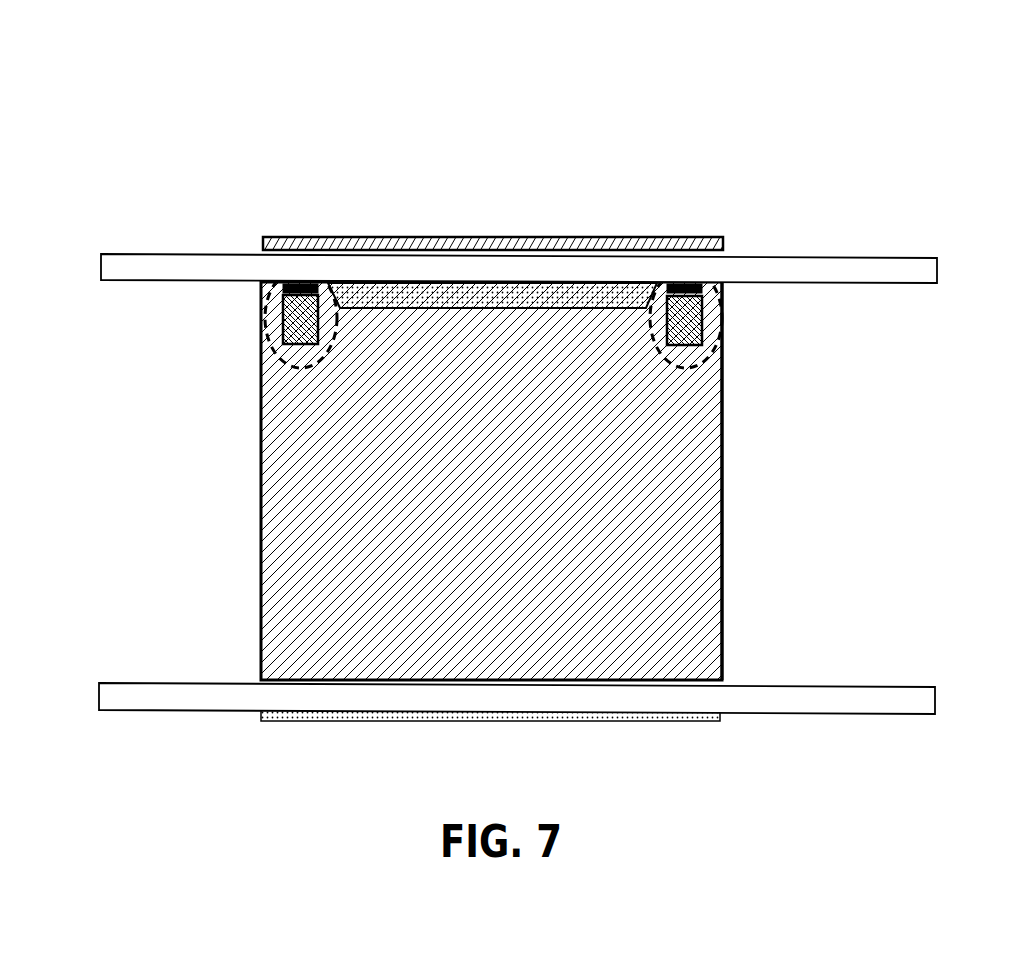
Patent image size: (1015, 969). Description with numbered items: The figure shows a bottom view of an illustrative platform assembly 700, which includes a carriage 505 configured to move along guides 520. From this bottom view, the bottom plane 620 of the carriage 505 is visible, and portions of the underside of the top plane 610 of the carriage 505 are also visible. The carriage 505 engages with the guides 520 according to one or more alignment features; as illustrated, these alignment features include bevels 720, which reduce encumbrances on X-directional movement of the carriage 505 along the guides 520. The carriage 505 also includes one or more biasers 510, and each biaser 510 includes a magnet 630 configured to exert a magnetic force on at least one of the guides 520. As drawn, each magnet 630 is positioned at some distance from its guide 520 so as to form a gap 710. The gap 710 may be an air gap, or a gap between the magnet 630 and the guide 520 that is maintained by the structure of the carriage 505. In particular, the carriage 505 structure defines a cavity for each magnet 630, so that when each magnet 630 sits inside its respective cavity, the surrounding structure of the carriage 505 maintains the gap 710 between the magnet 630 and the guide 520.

The platform assembly 700 is at (899, 120).
The carriage 505 is at (496, 512).
The biaser 510 is at (722, 184).
The guide 520 is at (148, 694).
The top plane 610 is at (833, 814).
The bottom plane 620 is at (710, 627).
The magnet 630 is at (806, 444).
The gap 710 is at (808, 342).
The bevel 720 is at (349, 237).